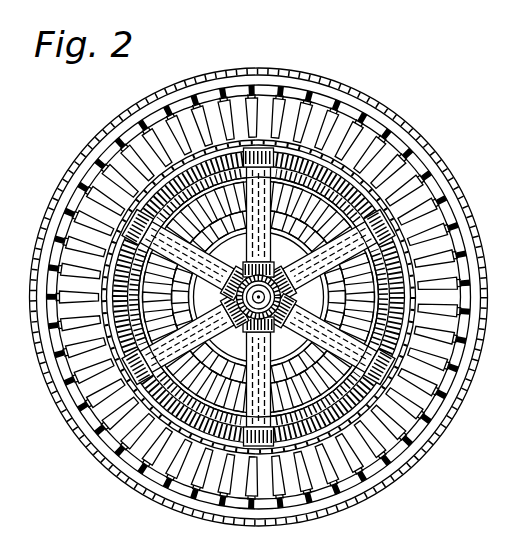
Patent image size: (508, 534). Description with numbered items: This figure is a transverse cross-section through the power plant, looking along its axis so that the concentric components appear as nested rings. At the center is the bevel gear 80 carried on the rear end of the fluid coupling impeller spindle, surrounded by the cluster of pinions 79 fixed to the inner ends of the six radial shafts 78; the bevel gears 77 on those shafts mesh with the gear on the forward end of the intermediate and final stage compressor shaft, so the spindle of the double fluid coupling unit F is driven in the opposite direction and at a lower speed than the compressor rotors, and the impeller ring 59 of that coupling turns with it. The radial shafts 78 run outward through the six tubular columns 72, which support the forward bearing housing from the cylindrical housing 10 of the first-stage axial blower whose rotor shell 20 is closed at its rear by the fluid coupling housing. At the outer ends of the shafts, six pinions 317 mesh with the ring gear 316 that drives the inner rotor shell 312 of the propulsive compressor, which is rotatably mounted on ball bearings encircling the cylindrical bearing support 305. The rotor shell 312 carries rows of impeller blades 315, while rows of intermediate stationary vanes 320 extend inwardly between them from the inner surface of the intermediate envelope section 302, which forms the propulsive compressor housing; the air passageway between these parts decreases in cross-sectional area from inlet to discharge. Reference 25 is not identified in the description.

The cylindrical housing 10 is at (153, 480).
The rotor shell 20 is at (298, 358).
The inner blade ring 25 is at (354, 314).
The impeller ring 59 is at (323, 271).
The radial tubular columns 72 is at (366, 197).
The bevel gears 77 is at (247, 253).
The radial shafts 78 is at (266, 256).
The pinions 79 is at (233, 298).
The bevel gear 80 is at (280, 297).
The intermediate envelope section 302 is at (347, 88).
The cylindrical bearing support 305 is at (213, 180).
The inner rotor shell 312 is at (427, 200).
The impeller blades 315 is at (150, 143).
The ring gear 316 is at (457, 258).
The pinions 317 is at (436, 392).
The intermediate stationary vanes 320 is at (72, 377).
The double fluid coupling unit F is at (103, 459).